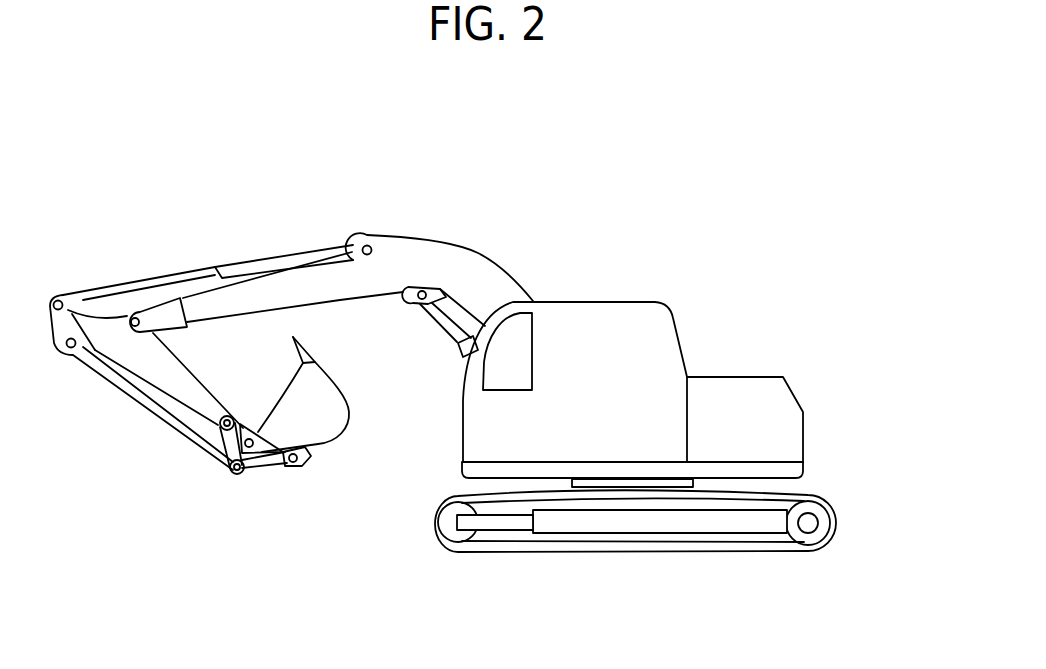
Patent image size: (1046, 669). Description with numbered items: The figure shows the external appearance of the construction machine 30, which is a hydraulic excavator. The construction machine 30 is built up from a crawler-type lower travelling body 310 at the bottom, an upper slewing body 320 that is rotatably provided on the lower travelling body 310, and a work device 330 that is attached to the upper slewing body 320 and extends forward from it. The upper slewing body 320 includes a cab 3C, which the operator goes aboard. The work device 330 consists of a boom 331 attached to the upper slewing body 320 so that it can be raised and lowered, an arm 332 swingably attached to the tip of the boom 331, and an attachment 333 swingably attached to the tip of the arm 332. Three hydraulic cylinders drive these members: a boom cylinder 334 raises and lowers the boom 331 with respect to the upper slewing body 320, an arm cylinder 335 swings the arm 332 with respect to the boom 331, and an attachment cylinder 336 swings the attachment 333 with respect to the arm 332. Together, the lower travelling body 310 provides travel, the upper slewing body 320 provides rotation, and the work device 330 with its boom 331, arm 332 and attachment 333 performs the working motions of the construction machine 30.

The construction machine 30 is at (818, 212).
The lower travelling body 310 is at (863, 505).
The upper slewing body 320 is at (853, 420).
The cab 3C is at (490, 436).
The work device 330 is at (167, 197).
The boom 331 is at (493, 272).
The arm 332 is at (177, 362).
The attachment 333 is at (330, 422).
The boom cylinder 334 is at (447, 326).
The arm cylinder 335 is at (276, 262).
The attachment cylinder 336 is at (145, 395).